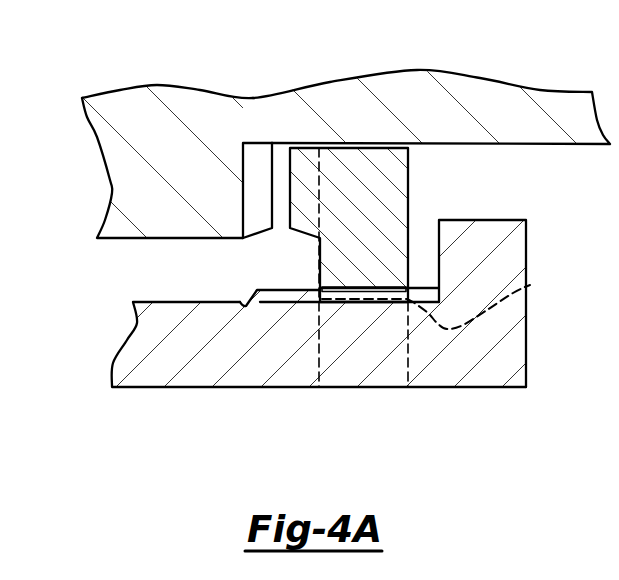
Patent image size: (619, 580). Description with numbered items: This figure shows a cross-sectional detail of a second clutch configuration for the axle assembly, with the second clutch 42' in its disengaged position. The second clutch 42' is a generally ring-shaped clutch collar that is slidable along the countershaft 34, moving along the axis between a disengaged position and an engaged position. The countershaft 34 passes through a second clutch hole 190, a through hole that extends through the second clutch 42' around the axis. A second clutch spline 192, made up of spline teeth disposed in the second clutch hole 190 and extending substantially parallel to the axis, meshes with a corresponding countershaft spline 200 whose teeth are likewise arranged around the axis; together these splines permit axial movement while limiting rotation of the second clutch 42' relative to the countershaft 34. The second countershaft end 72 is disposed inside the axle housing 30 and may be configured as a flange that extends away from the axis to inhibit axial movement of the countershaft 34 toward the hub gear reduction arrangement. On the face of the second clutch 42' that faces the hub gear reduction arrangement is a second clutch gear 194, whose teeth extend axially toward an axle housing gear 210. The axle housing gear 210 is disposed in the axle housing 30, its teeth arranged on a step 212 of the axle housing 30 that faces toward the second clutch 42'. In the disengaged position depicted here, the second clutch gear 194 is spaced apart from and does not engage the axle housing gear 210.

The axle housing 30 is at (128, 100).
The countershaft 34 is at (225, 347).
The second clutch 42' is at (436, 128).
The second countershaft end 72 is at (526, 248).
The second clutch hole 190 is at (350, 289).
The second clutch spline 192 is at (530, 285).
The second clutch gear 194 is at (307, 147).
The countershaft spline 200 is at (250, 302).
The axle housing gear 210 is at (272, 180).
The step 212 is at (243, 173).